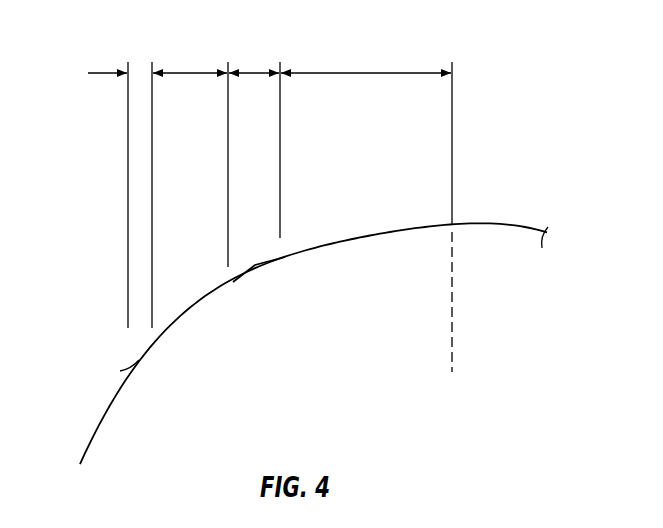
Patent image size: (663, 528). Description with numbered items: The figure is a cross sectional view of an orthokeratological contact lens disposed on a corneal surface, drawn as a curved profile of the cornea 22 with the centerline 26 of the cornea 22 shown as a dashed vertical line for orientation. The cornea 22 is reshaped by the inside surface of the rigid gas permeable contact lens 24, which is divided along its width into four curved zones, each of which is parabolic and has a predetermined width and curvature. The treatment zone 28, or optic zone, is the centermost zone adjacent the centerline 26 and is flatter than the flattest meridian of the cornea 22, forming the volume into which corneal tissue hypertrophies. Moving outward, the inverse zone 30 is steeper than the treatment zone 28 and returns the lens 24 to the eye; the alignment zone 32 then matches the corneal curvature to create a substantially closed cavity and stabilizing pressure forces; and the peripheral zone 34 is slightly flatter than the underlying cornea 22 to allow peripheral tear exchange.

The cornea 22 is at (101, 418).
The contact lens 24 is at (255, 265).
The centerline 26 is at (452, 317).
The treatment zone 28 is at (367, 30).
The inverse zone 30 is at (262, 28).
The alignment zone 32 is at (192, 28).
The peripheral zone 34 is at (142, 30).